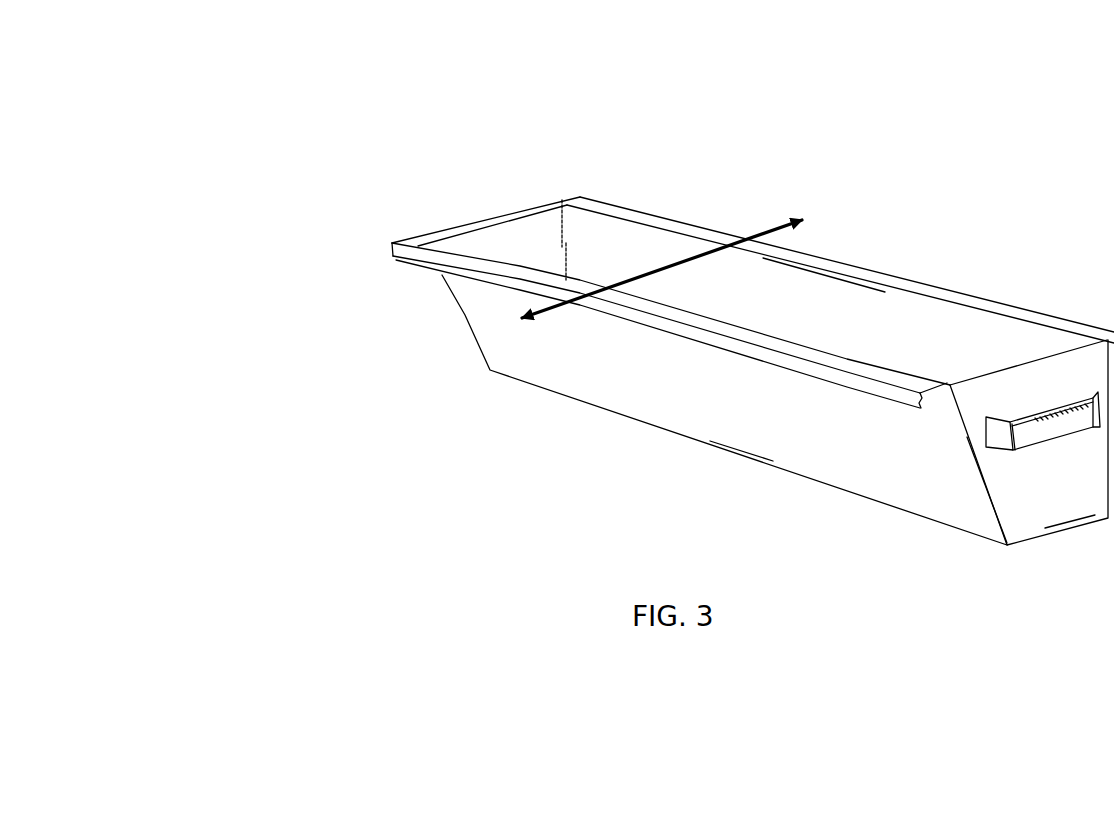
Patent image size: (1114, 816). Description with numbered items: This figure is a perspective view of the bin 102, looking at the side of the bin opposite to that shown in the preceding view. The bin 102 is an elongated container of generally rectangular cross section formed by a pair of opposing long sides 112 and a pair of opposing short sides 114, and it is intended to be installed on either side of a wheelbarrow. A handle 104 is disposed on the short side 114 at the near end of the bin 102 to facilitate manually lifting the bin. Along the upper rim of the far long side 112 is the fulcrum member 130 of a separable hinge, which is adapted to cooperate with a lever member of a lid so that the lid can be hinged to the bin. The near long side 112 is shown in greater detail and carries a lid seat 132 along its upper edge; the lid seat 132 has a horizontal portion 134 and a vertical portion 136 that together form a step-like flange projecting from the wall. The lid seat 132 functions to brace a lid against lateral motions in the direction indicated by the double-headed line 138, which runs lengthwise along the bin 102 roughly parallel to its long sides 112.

The bin 102 is at (362, 123).
The handle 104 is at (1070, 407).
The long side 112 is at (634, 369).
The short side 114 is at (545, 254).
The fulcrum member 130 is at (838, 265).
The lid seat 132 is at (504, 299).
The horizontal portion 134 is at (892, 375).
The vertical portion 136 is at (847, 384).
The line 138 is at (663, 270).